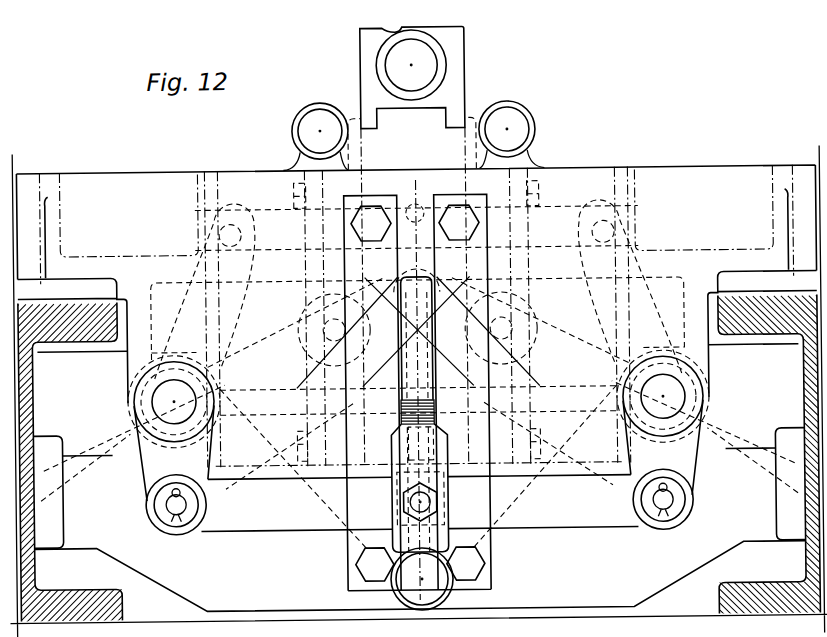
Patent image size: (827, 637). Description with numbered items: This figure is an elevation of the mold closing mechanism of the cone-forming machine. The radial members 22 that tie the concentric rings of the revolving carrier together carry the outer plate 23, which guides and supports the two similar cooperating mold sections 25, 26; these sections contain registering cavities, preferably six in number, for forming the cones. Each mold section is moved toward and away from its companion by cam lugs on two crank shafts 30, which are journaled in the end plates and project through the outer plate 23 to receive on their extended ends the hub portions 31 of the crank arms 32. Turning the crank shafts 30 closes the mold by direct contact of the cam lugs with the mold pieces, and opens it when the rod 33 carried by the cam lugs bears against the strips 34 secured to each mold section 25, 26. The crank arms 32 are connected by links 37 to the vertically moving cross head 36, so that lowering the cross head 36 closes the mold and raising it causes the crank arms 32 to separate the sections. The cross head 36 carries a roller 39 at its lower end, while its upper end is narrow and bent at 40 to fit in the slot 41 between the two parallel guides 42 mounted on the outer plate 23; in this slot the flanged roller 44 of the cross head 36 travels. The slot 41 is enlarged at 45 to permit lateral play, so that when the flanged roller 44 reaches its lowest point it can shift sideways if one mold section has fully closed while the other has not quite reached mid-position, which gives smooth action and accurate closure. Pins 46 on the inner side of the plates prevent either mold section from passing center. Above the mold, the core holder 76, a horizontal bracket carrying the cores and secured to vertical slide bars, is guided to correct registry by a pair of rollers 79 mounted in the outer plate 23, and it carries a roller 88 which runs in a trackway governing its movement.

The radial members 22 is at (88, 588).
The outer plate 23 is at (183, 183).
The mold section 25 is at (300, 494).
The mold section 26 is at (539, 489).
The crank shaft 30 is at (175, 386).
The hub portion 31 is at (138, 398).
The crank arm 32 is at (147, 466).
The rod 33 is at (307, 316).
The strip 34 is at (317, 297).
The cross head 36 is at (445, 501).
The link 37 is at (257, 529).
The roller 39 is at (393, 595).
The bent upper end of cross head 40 is at (439, 422).
The slot 41 is at (409, 213).
The parallel guide 42 is at (373, 200).
The flanged roller 44 is at (447, 514).
The enlargement of slot 45 is at (449, 456).
The pin 46 is at (407, 215).
The core holder 76 is at (366, 70).
The roller 79 is at (296, 118).
The roller 88 is at (441, 63).